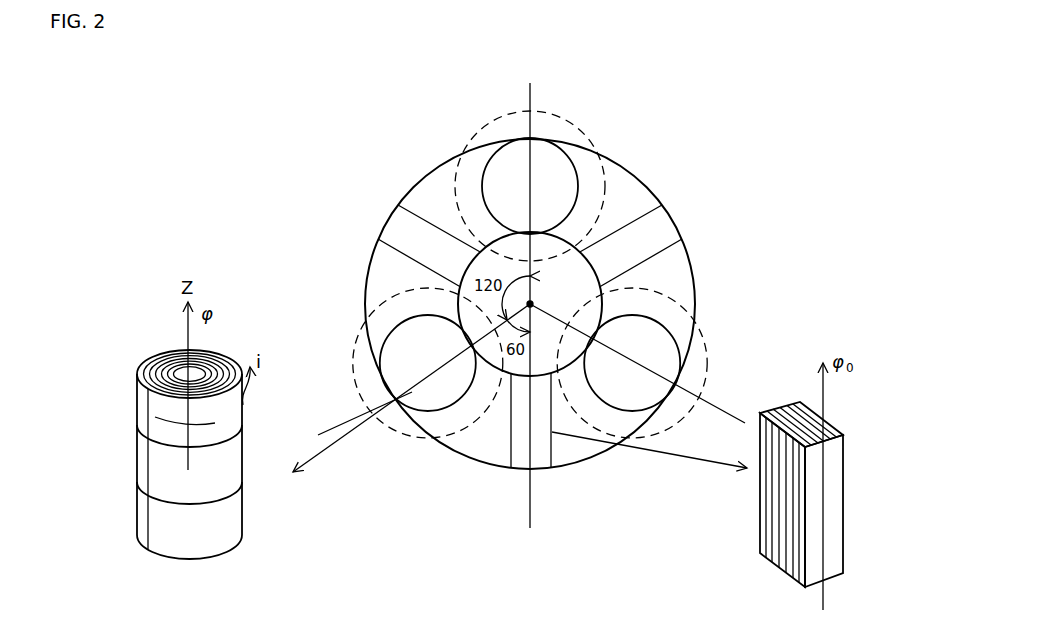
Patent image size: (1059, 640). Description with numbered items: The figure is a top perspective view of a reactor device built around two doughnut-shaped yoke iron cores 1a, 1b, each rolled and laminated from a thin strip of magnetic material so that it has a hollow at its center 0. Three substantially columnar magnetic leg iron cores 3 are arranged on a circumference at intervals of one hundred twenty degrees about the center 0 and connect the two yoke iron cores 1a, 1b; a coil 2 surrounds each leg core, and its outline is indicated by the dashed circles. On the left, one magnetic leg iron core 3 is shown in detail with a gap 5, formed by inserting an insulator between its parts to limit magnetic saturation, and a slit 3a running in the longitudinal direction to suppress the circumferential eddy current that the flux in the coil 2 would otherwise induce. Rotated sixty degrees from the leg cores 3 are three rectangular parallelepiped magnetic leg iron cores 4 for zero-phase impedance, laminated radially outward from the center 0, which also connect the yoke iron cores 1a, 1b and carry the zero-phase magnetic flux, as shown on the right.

The center 0 is at (530, 304).
The yoke iron core 1a is at (443, 188).
The yoke iron core 1b is at (501, 248).
The coil 2 is at (580, 132).
The magnetic leg iron core 3 is at (512, 168).
The slit 3a is at (153, 380).
The magnetic leg iron core for zero-phase impedance 4 is at (400, 232).
The gap 5 is at (208, 443).